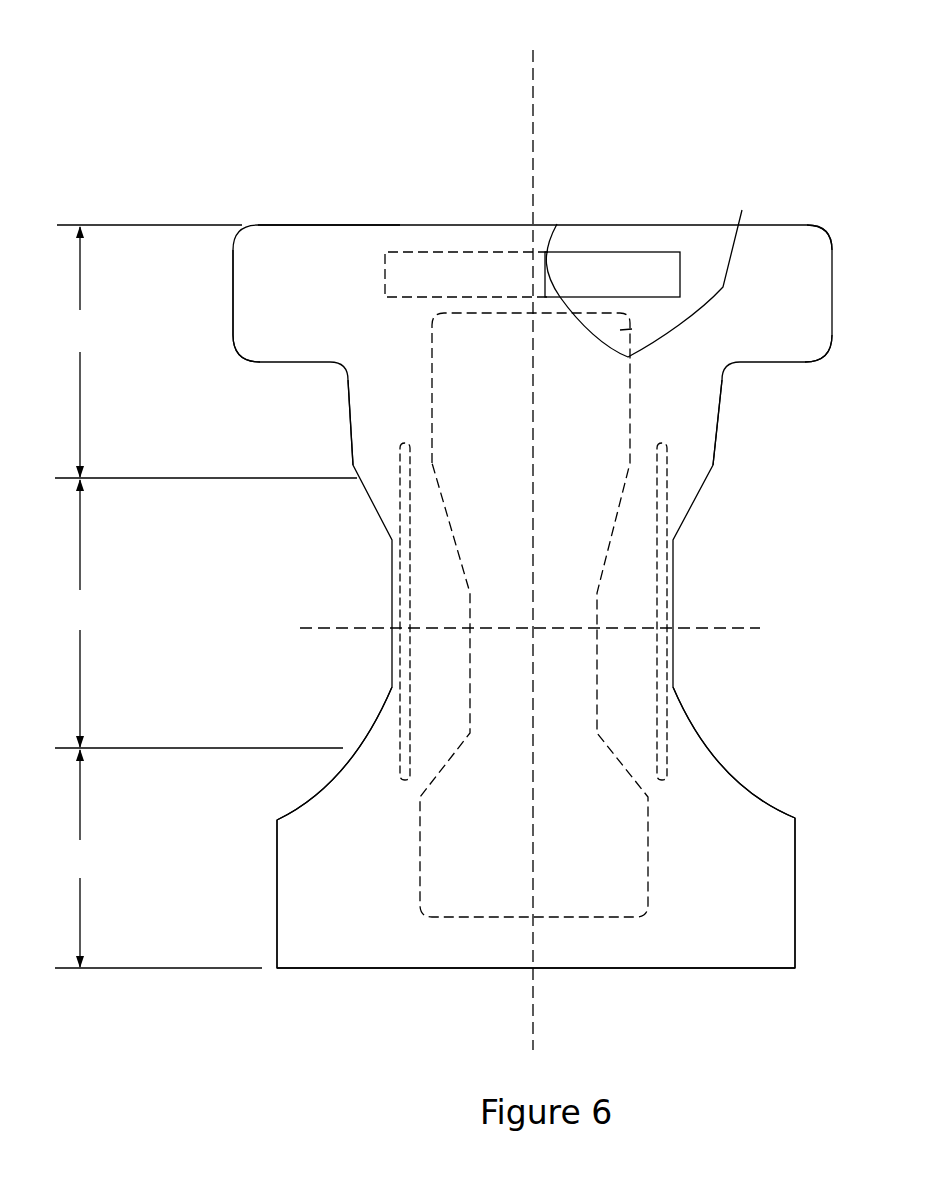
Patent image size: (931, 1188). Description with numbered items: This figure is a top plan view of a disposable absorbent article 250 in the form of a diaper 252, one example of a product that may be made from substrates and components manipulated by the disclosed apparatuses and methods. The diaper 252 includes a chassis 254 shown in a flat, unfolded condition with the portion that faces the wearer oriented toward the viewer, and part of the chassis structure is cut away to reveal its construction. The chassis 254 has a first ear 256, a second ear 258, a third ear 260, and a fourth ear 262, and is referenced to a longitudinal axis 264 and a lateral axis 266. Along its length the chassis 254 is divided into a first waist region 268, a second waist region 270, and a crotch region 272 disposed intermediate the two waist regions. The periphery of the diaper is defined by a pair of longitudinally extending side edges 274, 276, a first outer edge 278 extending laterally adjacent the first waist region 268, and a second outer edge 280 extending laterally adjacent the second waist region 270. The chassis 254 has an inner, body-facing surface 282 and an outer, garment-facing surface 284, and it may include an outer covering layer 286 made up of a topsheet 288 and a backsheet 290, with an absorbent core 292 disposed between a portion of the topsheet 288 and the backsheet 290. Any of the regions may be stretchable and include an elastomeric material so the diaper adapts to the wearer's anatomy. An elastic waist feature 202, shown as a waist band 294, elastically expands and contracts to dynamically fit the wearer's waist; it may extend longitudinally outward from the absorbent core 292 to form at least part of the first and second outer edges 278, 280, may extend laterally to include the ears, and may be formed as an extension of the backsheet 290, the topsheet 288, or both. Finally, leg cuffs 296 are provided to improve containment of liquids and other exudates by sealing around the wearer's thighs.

The elastic waist feature 202 is at (572, 270).
The disposable absorbent article 250 is at (616, 178).
The diaper 252 is at (338, 143).
The chassis 254 is at (335, 242).
The first ear 256 is at (768, 343).
The second ear 258 is at (253, 292).
The third ear 260 is at (740, 847).
The fourth ear 262 is at (302, 893).
The longitudinal axis 264 is at (537, 1033).
The lateral axis 266 is at (723, 628).
The first waist region 268 is at (198, 351).
The second waist region 270 is at (151, 859).
The crotch region 272 is at (191, 614).
The side edge 274 is at (713, 465).
The side edge 276 is at (348, 410).
The first outer edge 278 is at (441, 226).
The second outer edge 280 is at (388, 968).
The body-facing surface 282 is at (267, 343).
The garment-facing surface 284 is at (722, 240).
The outer covering layer 286 is at (702, 808).
The topsheet 288 is at (337, 805).
The backsheet 290 is at (670, 240).
The absorbent core 292 is at (620, 330).
The waist band 294 is at (478, 262).
The leg cuffs 296 is at (395, 565).